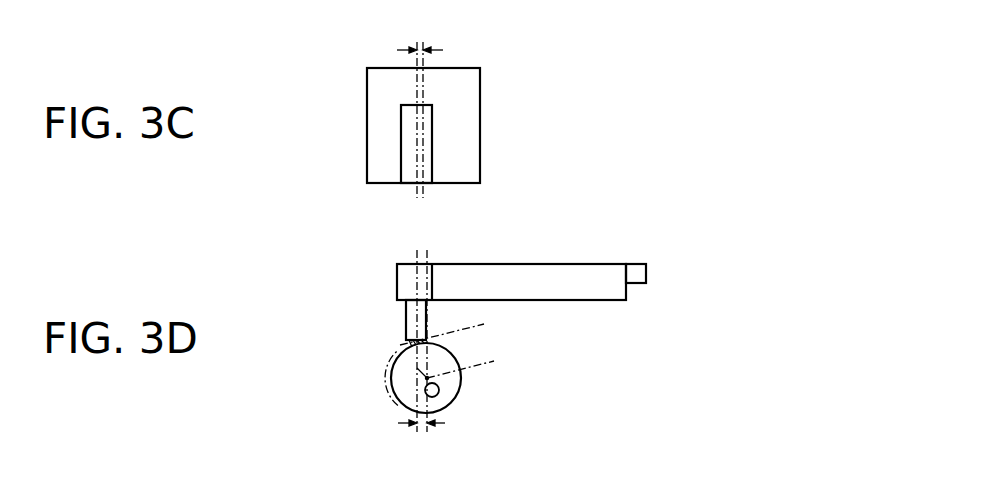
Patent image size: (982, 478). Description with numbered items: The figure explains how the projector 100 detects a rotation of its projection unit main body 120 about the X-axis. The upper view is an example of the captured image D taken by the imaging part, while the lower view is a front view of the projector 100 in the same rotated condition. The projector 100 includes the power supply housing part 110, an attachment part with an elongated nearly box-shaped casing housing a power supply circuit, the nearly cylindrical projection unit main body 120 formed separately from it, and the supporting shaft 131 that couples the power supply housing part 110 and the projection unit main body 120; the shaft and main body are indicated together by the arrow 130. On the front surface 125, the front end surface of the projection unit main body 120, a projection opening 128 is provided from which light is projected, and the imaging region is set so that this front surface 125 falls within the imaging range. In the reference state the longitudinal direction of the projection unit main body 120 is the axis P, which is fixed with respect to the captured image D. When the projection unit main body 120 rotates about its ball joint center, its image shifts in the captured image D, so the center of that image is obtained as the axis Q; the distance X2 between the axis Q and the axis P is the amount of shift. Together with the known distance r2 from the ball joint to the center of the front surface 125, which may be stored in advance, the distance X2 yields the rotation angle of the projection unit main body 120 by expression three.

In FIG. 3D, the projector 100 is at (674, 241).
In FIG. 3D, the power supply housing part 110 is at (607, 293).
In FIG. 3C, the projection unit main body 120 is at (432, 152).
In FIG. 3D, the projection unit main body 120 is at (461, 385).
In FIG. 3D, the front surface 125 is at (454, 378).
In FIG. 3D, the projection opening 128 is at (438, 394).
In FIG. 3D, the holder assembly 130 is at (444, 373).
In FIG. 3D, the supporting shaft 131 is at (405, 323).
In FIG. 3C, the captured image D is at (480, 95).
In FIG. 3C, the axis P is at (424, 167).
In FIG. 3D, the axis P is at (415, 270).
In FIG. 3C, the axis Q is at (418, 166).
In FIG. 3D, the axis Q is at (427, 258).
In FIG. 3C, the distance x2 X2 is at (420, 37).
In FIG. 3D, the distance x2 X2 is at (421, 441).
In FIG. 3D, the distance r2 is at (476, 334).